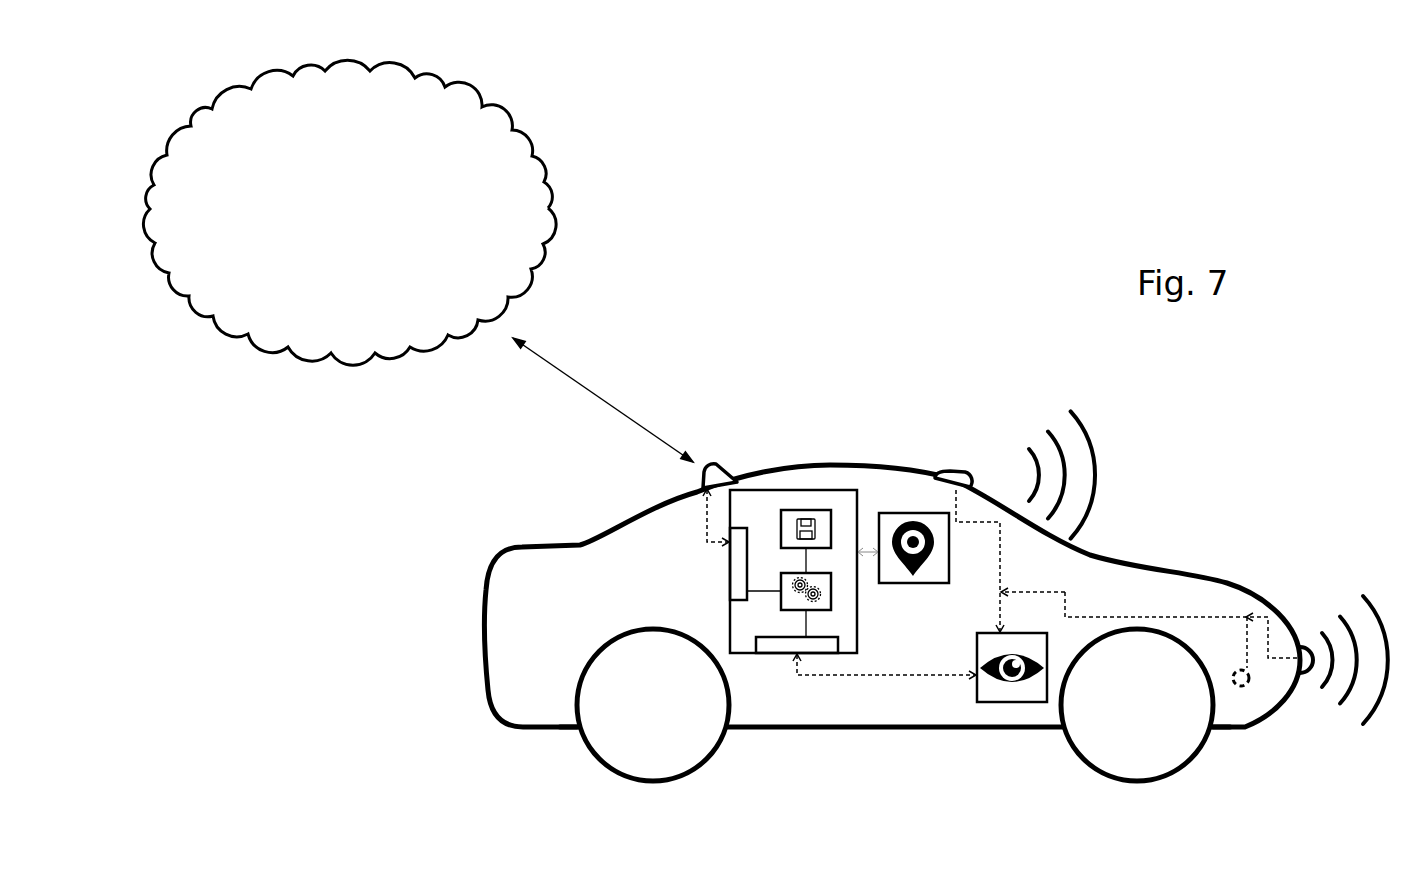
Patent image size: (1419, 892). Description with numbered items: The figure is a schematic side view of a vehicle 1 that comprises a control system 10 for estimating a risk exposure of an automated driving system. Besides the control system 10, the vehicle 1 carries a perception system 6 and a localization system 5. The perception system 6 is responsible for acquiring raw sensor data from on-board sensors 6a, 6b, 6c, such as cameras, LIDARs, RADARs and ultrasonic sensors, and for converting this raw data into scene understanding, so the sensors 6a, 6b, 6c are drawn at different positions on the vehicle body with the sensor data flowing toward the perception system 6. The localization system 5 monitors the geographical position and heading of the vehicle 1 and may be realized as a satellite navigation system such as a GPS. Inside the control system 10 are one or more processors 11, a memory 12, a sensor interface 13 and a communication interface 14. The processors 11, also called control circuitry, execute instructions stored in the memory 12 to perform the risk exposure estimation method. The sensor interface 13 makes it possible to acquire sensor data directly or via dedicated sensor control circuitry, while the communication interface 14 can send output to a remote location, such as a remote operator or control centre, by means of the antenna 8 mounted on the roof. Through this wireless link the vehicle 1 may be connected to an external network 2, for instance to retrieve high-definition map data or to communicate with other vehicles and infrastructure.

The vehicle 1 is at (505, 727).
The external network 2 is at (499, 102).
The localization system 5 is at (898, 513).
The perception system 6 is at (1023, 703).
The on-board sensor 6a is at (1250, 687).
The on-board sensor 6b is at (1306, 648).
The on-board sensor 6c is at (963, 472).
The antenna 8 is at (713, 465).
The control system 10 is at (786, 490).
The processor 11 is at (832, 597).
The memory 12 is at (808, 510).
The sensor interface 13 is at (781, 653).
The communication interface 14 is at (730, 577).